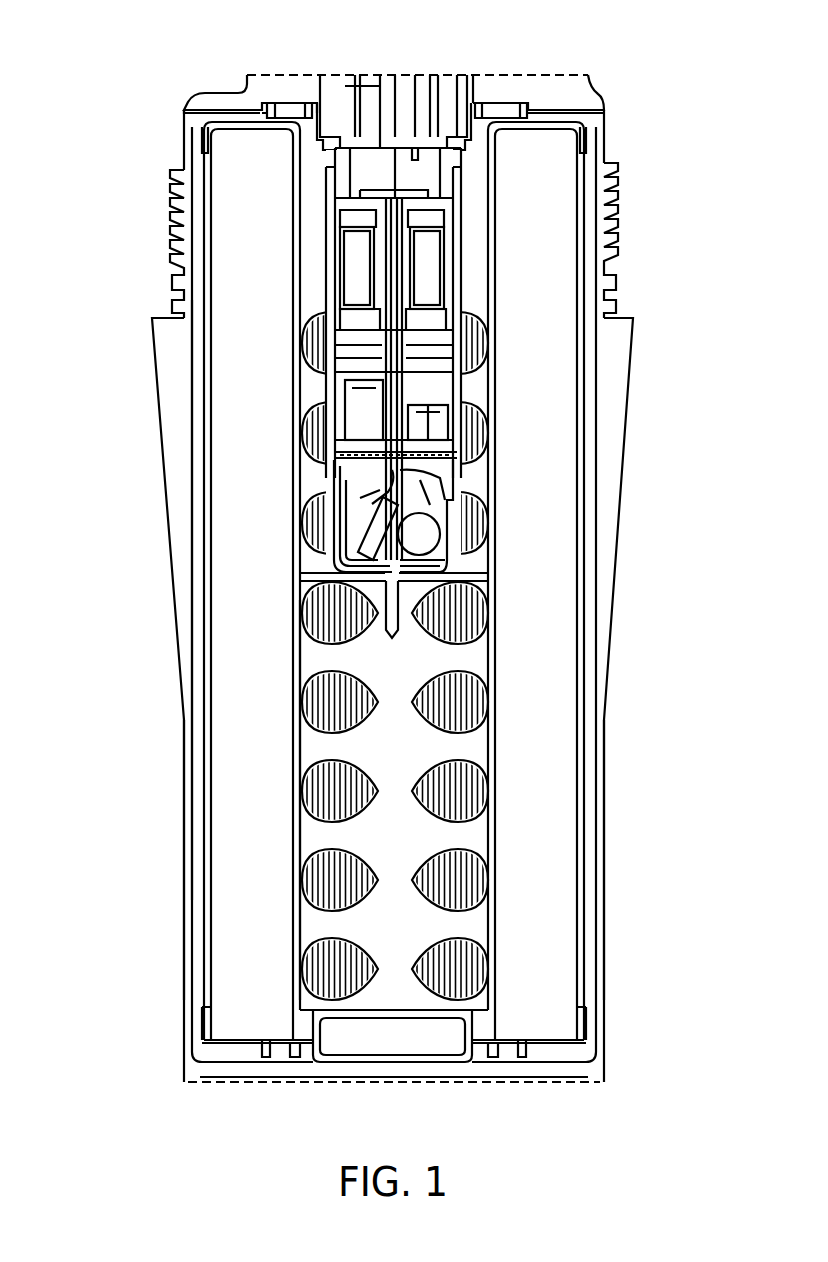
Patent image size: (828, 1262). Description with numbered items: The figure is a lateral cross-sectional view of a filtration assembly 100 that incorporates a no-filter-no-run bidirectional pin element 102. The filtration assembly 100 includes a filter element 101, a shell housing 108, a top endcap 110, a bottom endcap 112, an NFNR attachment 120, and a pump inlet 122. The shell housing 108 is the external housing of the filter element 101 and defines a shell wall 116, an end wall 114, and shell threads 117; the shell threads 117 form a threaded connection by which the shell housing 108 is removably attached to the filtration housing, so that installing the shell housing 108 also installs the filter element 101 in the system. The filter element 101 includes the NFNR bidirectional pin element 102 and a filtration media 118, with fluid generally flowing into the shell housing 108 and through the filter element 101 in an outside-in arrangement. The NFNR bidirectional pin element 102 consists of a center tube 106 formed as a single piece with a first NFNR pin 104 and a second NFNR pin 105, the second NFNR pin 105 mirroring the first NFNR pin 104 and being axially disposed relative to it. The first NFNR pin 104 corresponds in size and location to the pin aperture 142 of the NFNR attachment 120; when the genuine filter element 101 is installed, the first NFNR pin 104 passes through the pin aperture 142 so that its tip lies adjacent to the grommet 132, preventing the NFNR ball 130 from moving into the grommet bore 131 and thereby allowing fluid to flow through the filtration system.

The filtration assembly 100 is at (228, 58).
The filter element 101 is at (205, 828).
The NFNR bidirectional pin element 102 is at (292, 581).
The first NFNR pin 104 is at (388, 528).
The second NFNR pin 105 is at (392, 609).
The center tube 106 is at (295, 748).
The shell housing 108 is at (144, 368).
The top endcap 110 is at (181, 122).
The bottom endcap 112 is at (583, 1022).
The end wall 114 is at (328, 1058).
The shell wall 116 is at (183, 915).
The shell threads 117 is at (170, 246).
The filtration media 118 is at (557, 935).
The NFNR attachment 120 is at (478, 468).
The pump inlet 122 is at (450, 398).
The NFNR ball 130 is at (425, 535).
The grommet bore 131 is at (378, 514).
The grommet 132 is at (430, 503).
The pin aperture 142 is at (430, 567).